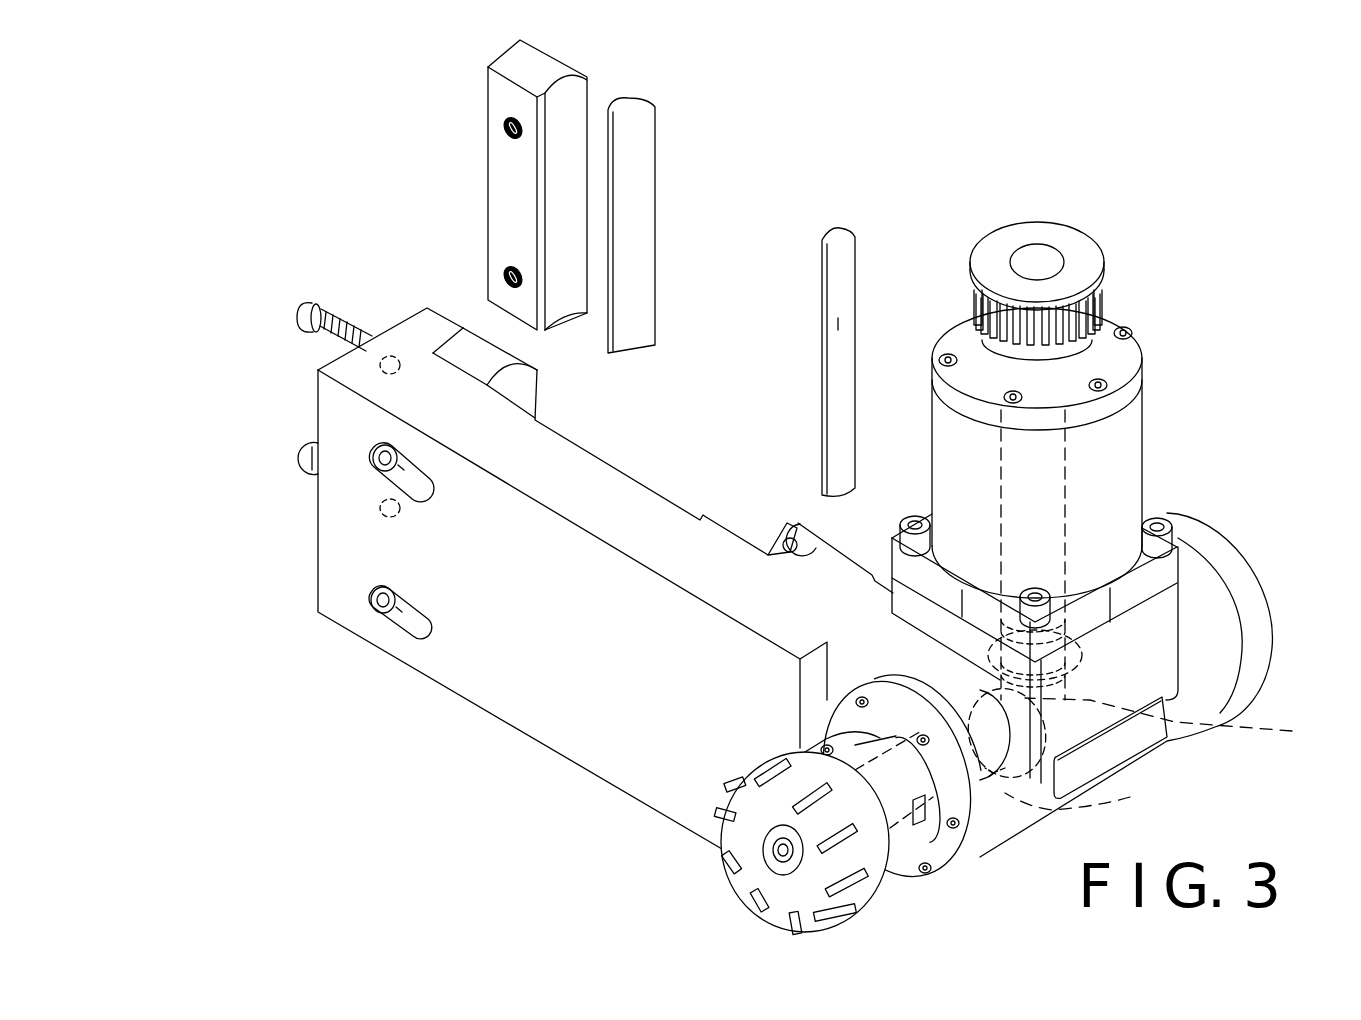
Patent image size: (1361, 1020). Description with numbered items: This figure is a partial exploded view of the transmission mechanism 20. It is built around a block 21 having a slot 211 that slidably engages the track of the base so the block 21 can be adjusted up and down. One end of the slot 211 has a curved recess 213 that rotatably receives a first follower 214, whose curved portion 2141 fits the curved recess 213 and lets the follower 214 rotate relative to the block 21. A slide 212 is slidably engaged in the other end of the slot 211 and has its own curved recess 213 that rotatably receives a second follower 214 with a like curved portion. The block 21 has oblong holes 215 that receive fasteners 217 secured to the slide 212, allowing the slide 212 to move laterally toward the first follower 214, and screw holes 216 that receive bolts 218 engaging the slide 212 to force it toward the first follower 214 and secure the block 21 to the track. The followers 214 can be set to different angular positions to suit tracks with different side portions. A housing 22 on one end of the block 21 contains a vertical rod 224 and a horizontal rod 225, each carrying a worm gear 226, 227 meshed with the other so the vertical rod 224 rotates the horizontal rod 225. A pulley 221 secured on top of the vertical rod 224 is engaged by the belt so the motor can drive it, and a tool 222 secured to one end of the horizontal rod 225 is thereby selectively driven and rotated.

The transmission mechanism 20 is at (1157, 441).
The block 21 is at (572, 758).
The slot 211 is at (633, 482).
The slide 212 is at (563, 58).
The curved recess 213 is at (580, 103).
The follower 214 is at (637, 107).
The curved portion 2141 is at (836, 320).
The oblong hole 215 is at (400, 490).
The screw hole 216 is at (383, 353).
The fastener 217 is at (376, 467).
The bolt 218 is at (315, 303).
The housing 22 is at (1170, 669).
The pulley 221 is at (1078, 243).
The tool 222 is at (975, 856).
The vertical rod 224 is at (1073, 492).
The horizontal rod 225 is at (1130, 797).
The worm gear 226 is at (1177, 723).
The worm gear 227 is at (1065, 811).